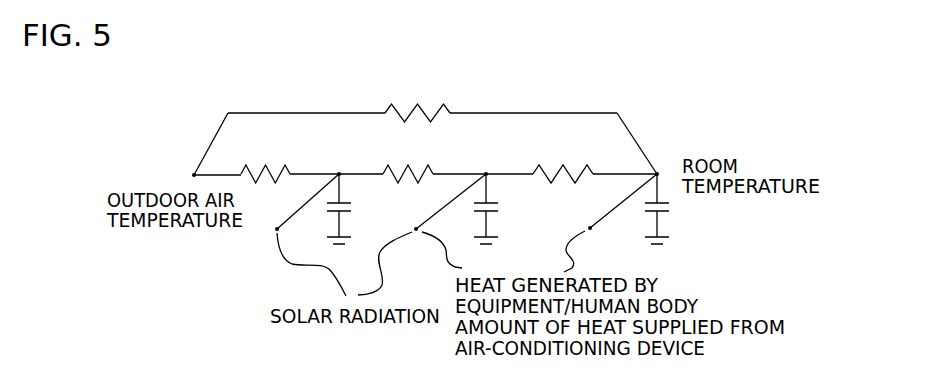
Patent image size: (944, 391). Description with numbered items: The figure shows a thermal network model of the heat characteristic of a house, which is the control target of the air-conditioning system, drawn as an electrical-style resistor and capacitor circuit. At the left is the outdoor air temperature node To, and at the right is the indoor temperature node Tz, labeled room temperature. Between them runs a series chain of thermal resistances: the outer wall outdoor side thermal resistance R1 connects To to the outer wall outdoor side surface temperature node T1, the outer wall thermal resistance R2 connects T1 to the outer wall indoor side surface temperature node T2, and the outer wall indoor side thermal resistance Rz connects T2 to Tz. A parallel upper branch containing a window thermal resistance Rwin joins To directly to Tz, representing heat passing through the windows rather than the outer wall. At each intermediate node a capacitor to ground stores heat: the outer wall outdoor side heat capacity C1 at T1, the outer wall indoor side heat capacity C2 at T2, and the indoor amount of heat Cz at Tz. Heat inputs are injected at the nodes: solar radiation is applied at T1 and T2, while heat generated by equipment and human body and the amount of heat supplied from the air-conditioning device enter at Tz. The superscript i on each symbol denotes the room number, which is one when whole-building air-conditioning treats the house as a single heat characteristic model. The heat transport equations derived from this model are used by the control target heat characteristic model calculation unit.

The window thermal resistance Rwin is at (417, 128).
The outer wall outdoor side thermal resistance R1 is at (265, 188).
The outer wall thermal resistance R2 is at (408, 187).
The outer wall indoor side thermal resistance Rz is at (563, 187).
The outer wall outdoor side heat capacity C1 is at (330, 209).
The outer wall indoor side heat capacity C2 is at (477, 209).
The indoor amount of heat Cz is at (648, 209).
The outdoor air temperature To is at (185, 162).
The outer wall outdoor side surface temperature T1 is at (341, 162).
The outer wall indoor side surface temperature T2 is at (490, 162).
The indoor temperature Tz is at (663, 157).